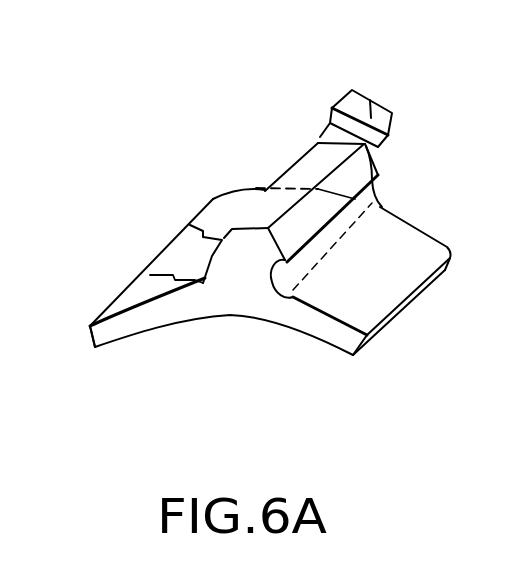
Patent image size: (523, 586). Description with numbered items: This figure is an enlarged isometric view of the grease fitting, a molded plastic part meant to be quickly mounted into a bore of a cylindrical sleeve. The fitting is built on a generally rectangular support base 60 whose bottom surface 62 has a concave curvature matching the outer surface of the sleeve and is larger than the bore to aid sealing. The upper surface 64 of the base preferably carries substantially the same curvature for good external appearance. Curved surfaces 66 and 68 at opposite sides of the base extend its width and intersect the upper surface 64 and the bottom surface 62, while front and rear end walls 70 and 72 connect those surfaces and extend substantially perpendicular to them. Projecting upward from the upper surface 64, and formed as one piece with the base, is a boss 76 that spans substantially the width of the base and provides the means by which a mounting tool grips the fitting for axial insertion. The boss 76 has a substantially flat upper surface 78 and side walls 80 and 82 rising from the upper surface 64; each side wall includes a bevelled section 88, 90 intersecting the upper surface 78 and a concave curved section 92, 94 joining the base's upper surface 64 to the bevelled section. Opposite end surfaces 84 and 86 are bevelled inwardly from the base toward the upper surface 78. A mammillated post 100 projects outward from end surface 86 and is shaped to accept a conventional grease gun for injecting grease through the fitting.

The support base 60 is at (358, 350).
The bottom surface 62 is at (115, 348).
The upper surface 64 is at (440, 241).
The curved surface 66 is at (450, 268).
The curved surface 68 is at (90, 333).
The front end wall 70 is at (190, 304).
The rear end wall 72 is at (400, 215).
The boss 76 is at (400, 143).
The upper surface 78 is at (256, 215).
The side wall 80 is at (305, 263).
The side wall 82 is at (213, 200).
The end surface 84 is at (190, 225).
The end surface 86 is at (387, 144).
The bevelled section 88 is at (318, 186).
The bevelled section 90 is at (265, 188).
The concave curved section 92 is at (292, 282).
The concave curved section 94 is at (150, 275).
The mammillated post 100 is at (370, 100).